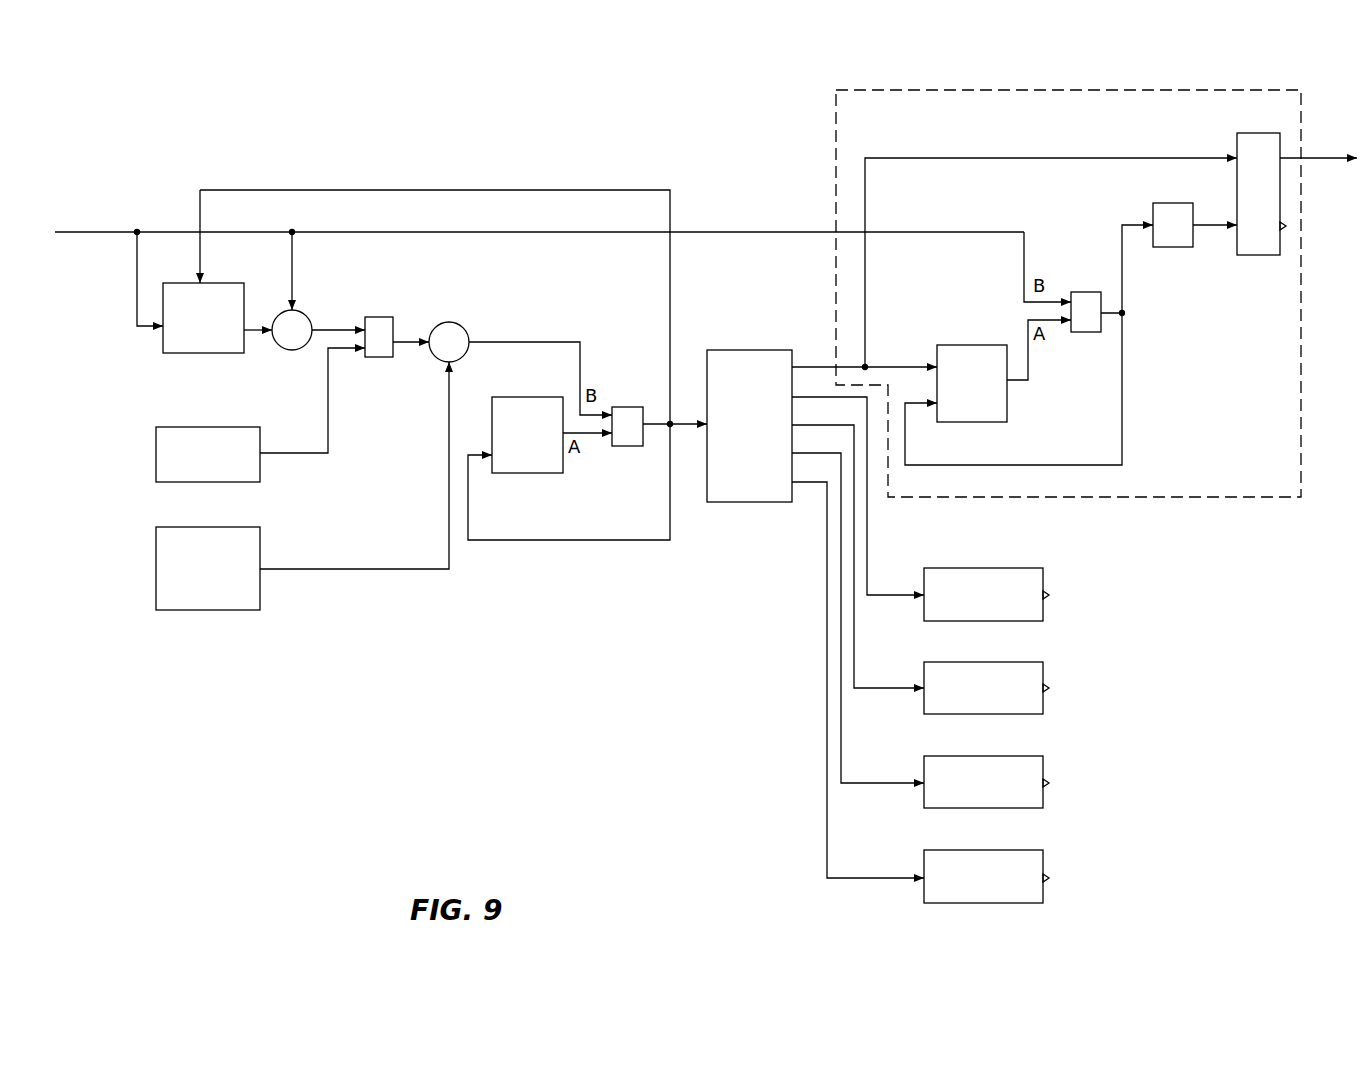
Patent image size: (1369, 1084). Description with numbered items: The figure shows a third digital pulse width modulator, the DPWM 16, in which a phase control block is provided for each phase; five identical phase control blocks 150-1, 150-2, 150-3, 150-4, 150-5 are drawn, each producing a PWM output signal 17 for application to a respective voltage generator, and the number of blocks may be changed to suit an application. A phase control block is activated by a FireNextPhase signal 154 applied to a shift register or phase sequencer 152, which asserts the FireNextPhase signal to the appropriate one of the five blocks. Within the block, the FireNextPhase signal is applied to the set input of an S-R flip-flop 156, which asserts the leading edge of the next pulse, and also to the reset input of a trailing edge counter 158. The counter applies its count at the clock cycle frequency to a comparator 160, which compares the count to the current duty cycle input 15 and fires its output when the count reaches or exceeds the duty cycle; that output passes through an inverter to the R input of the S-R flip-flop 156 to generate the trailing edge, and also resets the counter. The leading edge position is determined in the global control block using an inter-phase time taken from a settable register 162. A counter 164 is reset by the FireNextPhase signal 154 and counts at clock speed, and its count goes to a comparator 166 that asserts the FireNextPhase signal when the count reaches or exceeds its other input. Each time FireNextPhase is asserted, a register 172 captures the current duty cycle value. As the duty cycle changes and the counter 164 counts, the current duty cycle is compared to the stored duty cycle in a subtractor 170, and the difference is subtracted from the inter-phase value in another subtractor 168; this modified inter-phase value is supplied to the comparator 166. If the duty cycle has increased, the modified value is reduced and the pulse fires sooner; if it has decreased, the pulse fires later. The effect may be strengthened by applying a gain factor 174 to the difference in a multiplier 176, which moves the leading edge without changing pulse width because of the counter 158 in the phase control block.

The duty cycle input 15 is at (88, 234).
The DPWM 16 is at (545, 718).
The PWM output signal 17 is at (1334, 155).
The phase control block 150-1 is at (835, 112).
The phase control block 150-2 is at (1043, 577).
The phase control block 150-3 is at (1043, 671).
The phase control block 150-4 is at (1043, 765).
The phase control block 150-5 is at (1043, 859).
The phase sequencer 152 is at (752, 350).
The FireNextPhase signal 154 is at (685, 428).
The S-R flip-flop 156 is at (1237, 133).
The trailing edge counter 158 is at (965, 345).
The comparator 160 is at (1090, 292).
The settable register 162 is at (156, 568).
The counter 164 is at (530, 397).
The comparator 166 is at (630, 407).
The subtractor 168 is at (465, 325).
The subtractor 170 is at (306, 316).
The register 172 is at (163, 345).
The gain factor 174 is at (156, 453).
The multiplier 176 is at (385, 317).